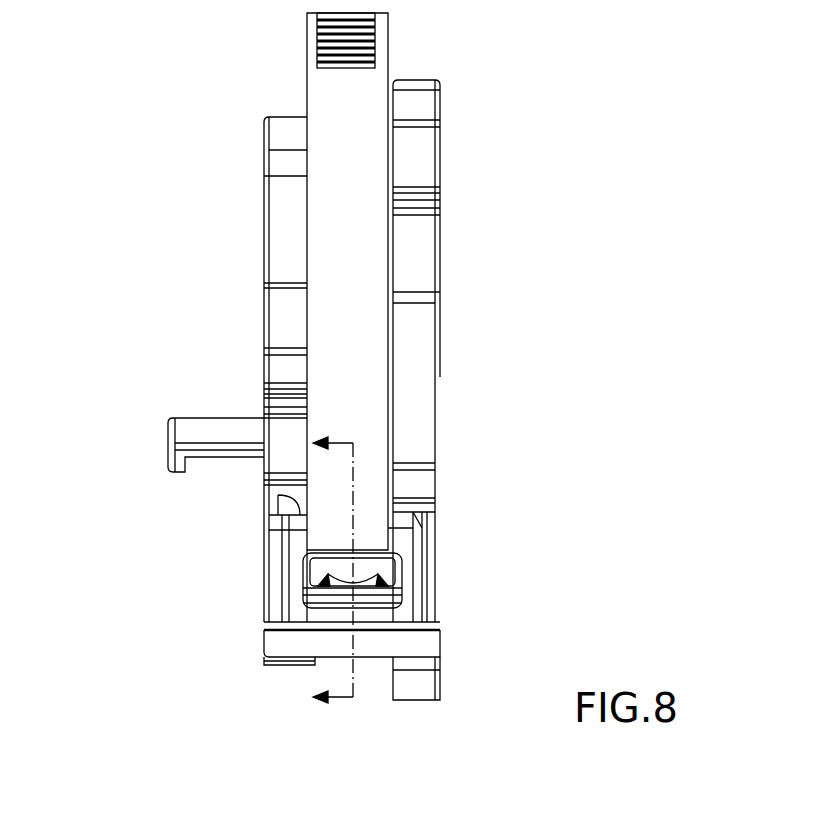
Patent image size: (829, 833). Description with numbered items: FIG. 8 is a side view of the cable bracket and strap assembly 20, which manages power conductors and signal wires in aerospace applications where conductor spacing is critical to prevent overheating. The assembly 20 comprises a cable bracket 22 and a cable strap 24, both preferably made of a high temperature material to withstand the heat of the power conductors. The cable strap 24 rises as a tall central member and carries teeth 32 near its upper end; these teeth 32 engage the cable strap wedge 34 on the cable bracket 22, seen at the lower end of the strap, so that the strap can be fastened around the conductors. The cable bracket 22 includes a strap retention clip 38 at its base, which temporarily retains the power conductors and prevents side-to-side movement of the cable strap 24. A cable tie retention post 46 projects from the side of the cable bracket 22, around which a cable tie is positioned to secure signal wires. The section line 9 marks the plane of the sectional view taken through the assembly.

The cable bracket and strap assembly 20 is at (489, 139).
The cable bracket 22 is at (264, 275).
The cable strap 24 is at (307, 47).
The teeth 32 is at (365, 35).
The cable strap wedge 34 is at (363, 570).
The retention clip 38 is at (440, 678).
The cable tie retention post 46 is at (168, 458).
The section line 9- 9 is at (335, 572).